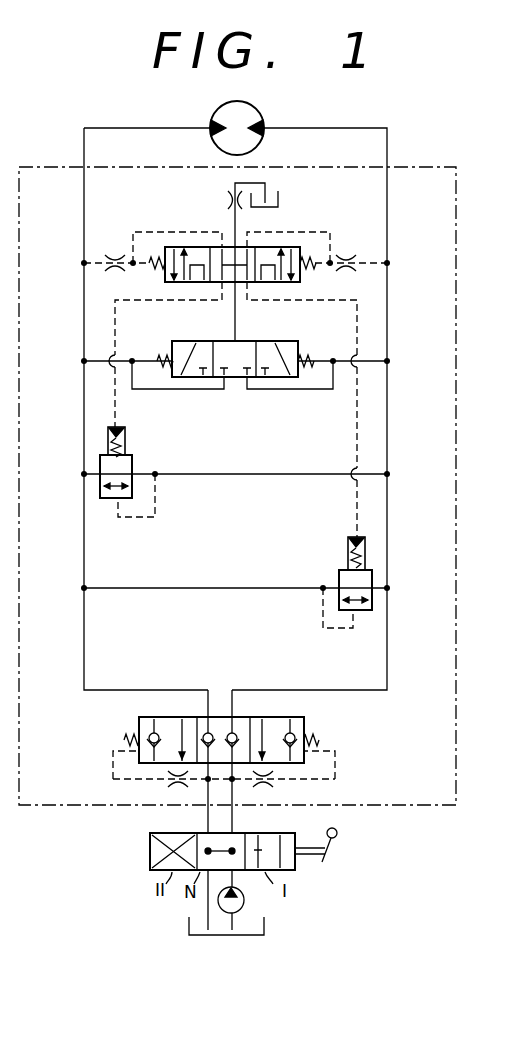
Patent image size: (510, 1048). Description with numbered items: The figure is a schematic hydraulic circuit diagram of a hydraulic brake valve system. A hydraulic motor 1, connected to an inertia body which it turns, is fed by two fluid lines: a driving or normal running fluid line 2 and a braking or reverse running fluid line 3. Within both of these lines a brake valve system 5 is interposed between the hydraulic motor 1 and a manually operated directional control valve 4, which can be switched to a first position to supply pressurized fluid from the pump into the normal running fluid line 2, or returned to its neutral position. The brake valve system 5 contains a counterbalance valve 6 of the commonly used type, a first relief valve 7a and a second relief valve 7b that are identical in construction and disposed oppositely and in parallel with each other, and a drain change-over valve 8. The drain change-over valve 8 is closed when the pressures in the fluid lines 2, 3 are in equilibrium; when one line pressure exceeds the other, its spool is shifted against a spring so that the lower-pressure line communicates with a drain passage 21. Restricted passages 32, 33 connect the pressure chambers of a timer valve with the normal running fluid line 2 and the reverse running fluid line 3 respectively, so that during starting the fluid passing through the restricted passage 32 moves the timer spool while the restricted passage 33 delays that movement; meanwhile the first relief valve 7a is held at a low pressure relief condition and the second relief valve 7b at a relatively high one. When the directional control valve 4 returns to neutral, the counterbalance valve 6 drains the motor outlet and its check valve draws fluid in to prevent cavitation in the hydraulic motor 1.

The hydraulic motor 1 is at (254, 110).
The normal running fluid line 2 is at (387, 440).
The reverse running fluid line 3 is at (84, 428).
The manually operated directional control valve 4 is at (280, 826).
The brake valve system 5 is at (457, 271).
The counterbalance valve 6 is at (304, 715).
The first relief valve 7a is at (339, 571).
The second relief valve 7b is at (132, 456).
The drain change-over valve 8 is at (298, 343).
The drain passage 21 is at (235, 230).
The restricted passage 32 is at (344, 256).
The restricted passage 33 is at (115, 257).